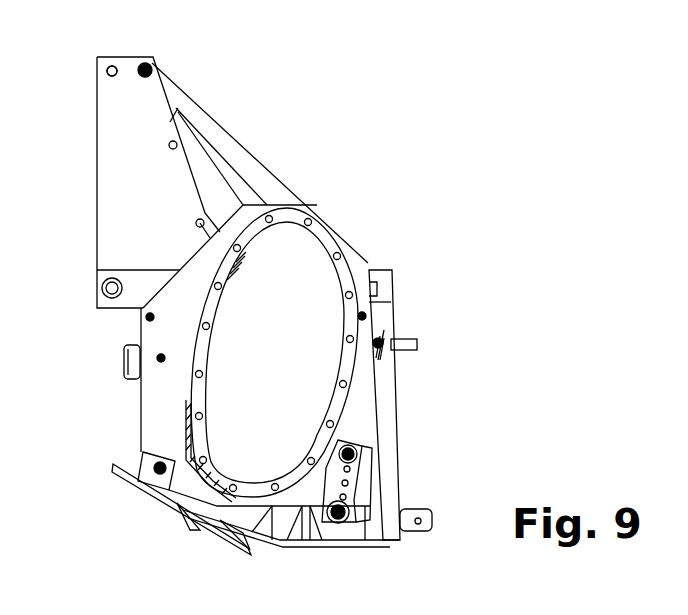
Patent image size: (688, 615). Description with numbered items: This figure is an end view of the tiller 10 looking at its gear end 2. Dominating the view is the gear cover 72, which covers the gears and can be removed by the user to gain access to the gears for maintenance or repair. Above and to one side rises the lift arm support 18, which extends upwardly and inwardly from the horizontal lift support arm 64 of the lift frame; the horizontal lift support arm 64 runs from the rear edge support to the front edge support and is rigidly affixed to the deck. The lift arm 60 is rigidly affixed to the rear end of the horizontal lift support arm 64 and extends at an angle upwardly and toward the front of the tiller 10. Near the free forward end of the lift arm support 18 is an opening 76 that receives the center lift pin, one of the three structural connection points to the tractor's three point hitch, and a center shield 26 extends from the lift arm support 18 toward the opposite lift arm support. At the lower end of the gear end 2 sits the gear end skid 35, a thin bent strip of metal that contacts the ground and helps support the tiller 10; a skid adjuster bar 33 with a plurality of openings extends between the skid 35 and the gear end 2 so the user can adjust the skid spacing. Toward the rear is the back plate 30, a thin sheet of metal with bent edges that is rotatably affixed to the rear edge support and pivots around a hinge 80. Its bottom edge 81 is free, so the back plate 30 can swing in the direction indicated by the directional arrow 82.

The gear end 2 is at (179, 413).
The tiller 10 is at (364, 172).
The lift arm support 18 is at (153, 186).
The center shield 26 is at (233, 211).
The back plate 30 is at (392, 462).
The skid adjuster bar 33 is at (352, 480).
The gear end skid 35 is at (173, 510).
The lift arm 60 is at (200, 123).
The horizontal lift support arm 64 is at (132, 296).
The gear cover 72 is at (284, 378).
The opening 76 is at (110, 65).
The hinge 80 is at (380, 345).
The bottom edge 81 is at (397, 541).
The directional arrow 82 is at (437, 470).